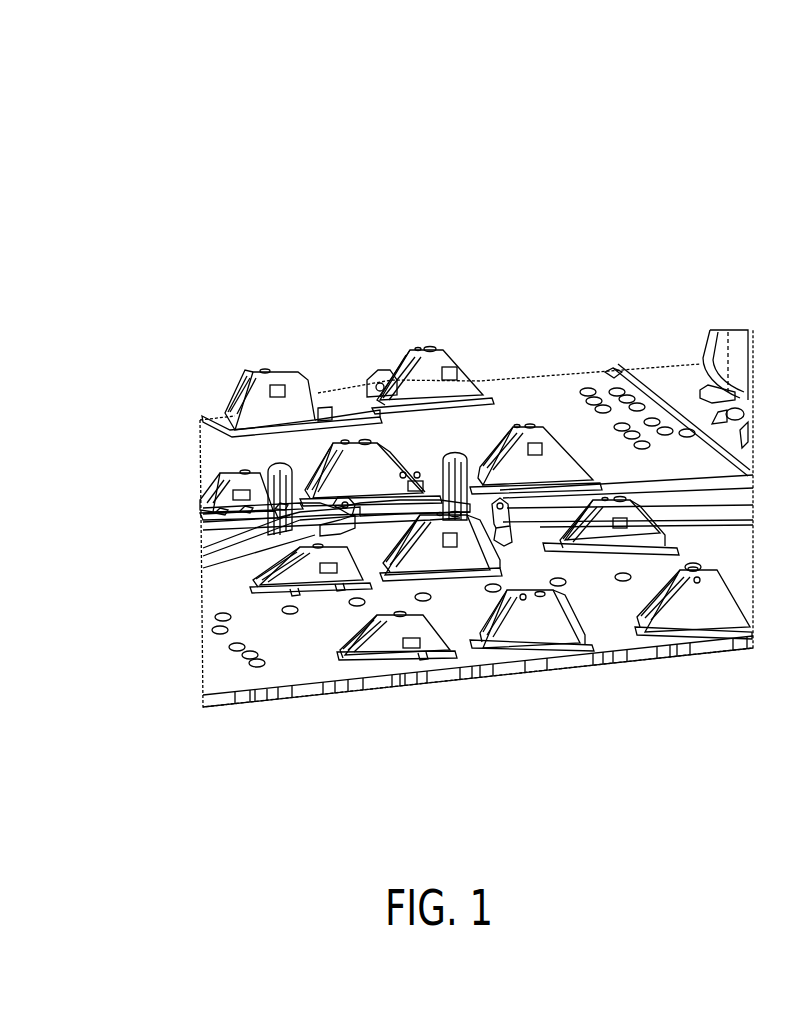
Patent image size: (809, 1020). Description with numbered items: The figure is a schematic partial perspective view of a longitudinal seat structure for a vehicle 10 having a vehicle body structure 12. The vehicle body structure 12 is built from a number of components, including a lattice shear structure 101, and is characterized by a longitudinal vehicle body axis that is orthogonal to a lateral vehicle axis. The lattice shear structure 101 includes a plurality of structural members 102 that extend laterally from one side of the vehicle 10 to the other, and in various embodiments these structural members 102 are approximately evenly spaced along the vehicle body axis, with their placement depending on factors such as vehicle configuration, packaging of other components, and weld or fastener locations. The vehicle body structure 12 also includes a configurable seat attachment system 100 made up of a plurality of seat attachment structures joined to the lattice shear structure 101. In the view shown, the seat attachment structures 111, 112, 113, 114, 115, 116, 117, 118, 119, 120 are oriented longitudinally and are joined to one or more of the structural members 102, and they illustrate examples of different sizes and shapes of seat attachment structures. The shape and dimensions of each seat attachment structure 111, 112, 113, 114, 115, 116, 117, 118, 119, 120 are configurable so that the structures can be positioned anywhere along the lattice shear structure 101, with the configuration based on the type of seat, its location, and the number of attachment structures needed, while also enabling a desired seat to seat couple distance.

The vehicle 10 is at (284, 161).
The vehicle body structure 12 is at (232, 350).
The configurable seat attachment system 100 is at (444, 303).
The lattice shear structure 101 is at (201, 664).
The structural members 102 is at (543, 667).
The seat attachment structure 111 is at (267, 387).
The seat attachment structure 112 is at (360, 473).
The seat attachment structure 113 is at (445, 375).
The seat attachment structure 114 is at (468, 535).
The seat attachment structure 115 is at (538, 460).
The seat attachment structure 116 is at (295, 582).
The seat attachment structure 117 is at (390, 652).
The seat attachment structure 118 is at (552, 632).
The seat attachment structure 119 is at (637, 542).
The seat attachment structure 120 is at (710, 608).